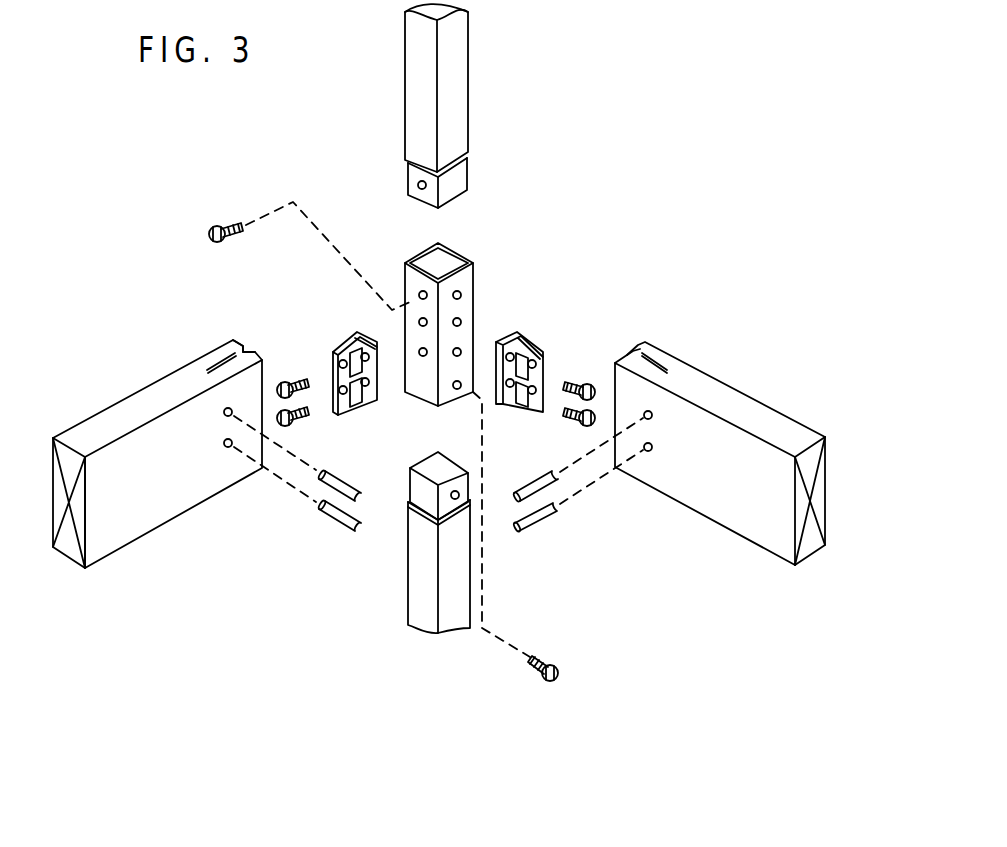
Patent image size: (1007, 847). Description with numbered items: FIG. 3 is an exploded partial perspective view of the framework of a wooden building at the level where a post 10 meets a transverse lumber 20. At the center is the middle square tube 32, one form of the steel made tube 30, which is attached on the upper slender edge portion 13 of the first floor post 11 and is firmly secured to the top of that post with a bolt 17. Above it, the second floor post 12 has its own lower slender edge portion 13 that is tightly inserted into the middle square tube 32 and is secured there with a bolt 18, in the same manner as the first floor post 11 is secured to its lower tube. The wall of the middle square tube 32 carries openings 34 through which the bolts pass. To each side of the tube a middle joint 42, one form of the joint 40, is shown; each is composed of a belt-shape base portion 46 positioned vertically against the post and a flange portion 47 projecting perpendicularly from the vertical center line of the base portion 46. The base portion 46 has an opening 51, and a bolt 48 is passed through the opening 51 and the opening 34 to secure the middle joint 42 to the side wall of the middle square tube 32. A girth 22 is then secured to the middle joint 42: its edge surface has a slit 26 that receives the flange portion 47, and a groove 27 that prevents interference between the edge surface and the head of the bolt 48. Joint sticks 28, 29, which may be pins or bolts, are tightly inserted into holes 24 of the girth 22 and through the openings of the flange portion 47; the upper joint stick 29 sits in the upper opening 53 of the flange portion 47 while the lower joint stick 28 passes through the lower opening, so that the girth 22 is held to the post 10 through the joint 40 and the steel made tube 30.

The post 10 is at (451, 332).
The first floor post 11 is at (417, 598).
The second floor post 12 is at (453, 52).
The slender edge portion 13 is at (407, 181).
The bolt 17 is at (560, 667).
The bolt 18 is at (217, 224).
The transverse lumber 20 is at (439, 442).
The girth 22 is at (705, 397).
The hole 24 is at (225, 410).
The slit 26 is at (213, 360).
The groove 27 is at (243, 347).
The joint stick 28 is at (330, 517).
The joint stick 29 is at (536, 478).
The steel made tube 30 is at (496, 297).
The middle square tube 32 is at (447, 250).
The opening 34 is at (460, 320).
The joint 40 is at (544, 344).
The middle joint 42 is at (533, 328).
The base portion 46 is at (354, 360).
The flange portion 47 is at (343, 406).
The bolt 48 is at (585, 372).
The opening 51 is at (369, 389).
The upper opening 53 is at (333, 362).